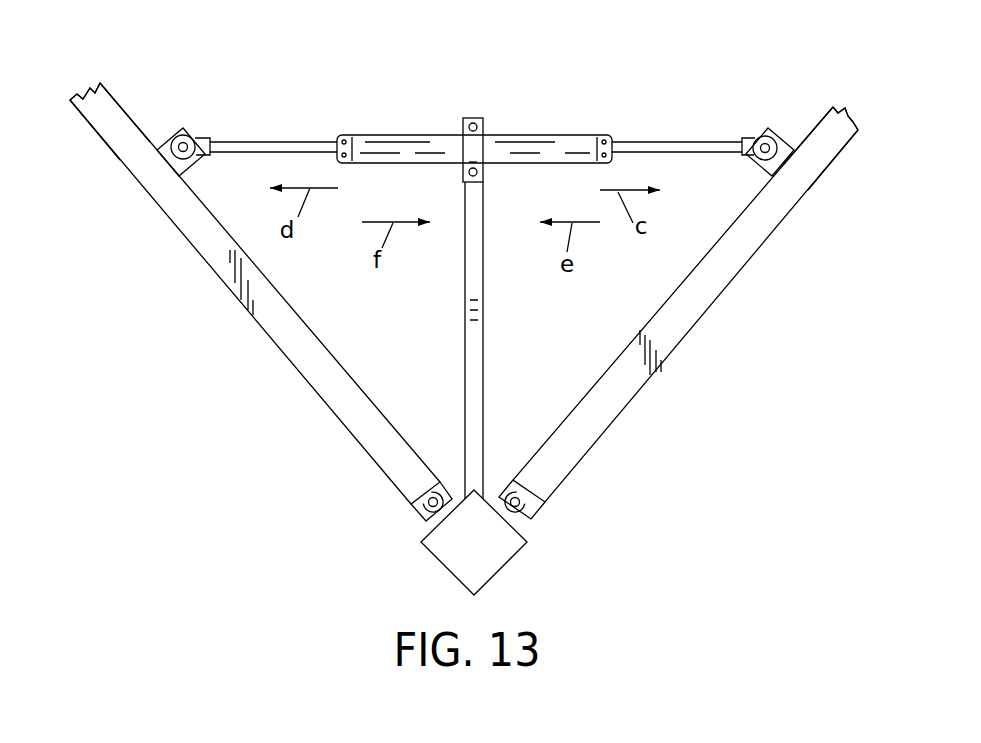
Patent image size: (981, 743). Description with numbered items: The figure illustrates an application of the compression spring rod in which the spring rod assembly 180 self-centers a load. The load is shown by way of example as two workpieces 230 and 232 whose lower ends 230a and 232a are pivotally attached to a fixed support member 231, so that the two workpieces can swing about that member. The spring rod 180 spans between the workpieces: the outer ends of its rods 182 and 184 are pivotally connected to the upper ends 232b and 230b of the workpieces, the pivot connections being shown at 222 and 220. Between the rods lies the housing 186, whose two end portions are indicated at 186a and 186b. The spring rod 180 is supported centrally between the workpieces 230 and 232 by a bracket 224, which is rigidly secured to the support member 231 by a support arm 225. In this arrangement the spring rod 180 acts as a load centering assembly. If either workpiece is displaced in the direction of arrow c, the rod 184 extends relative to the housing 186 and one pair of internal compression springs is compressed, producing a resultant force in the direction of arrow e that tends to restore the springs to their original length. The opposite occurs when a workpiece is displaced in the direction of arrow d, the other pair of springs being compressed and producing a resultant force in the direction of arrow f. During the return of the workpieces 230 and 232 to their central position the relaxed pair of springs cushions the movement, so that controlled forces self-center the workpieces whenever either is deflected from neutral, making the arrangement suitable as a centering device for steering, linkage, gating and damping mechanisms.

The spring rod assembly 180 is at (488, 93).
The rod 182 is at (273, 140).
The rod 184 is at (677, 141).
The housing 186 is at (518, 133).
The left end of actuator body 186a is at (339, 134).
The right end of actuator body 186b is at (603, 135).
The right pivot clamp 220 is at (770, 127).
The left pivot clamp 222 is at (182, 126).
The bracket 224 is at (469, 117).
The support arm 225 is at (484, 300).
The workpiece 230 is at (680, 341).
The end of workpiece 230a is at (540, 484).
The right arm upper end 230b is at (828, 152).
The fixed support member 231 is at (508, 566).
The workpiece 232 is at (270, 338).
The end of workpiece 232a is at (410, 486).
The end of workpiece 232b is at (103, 128).